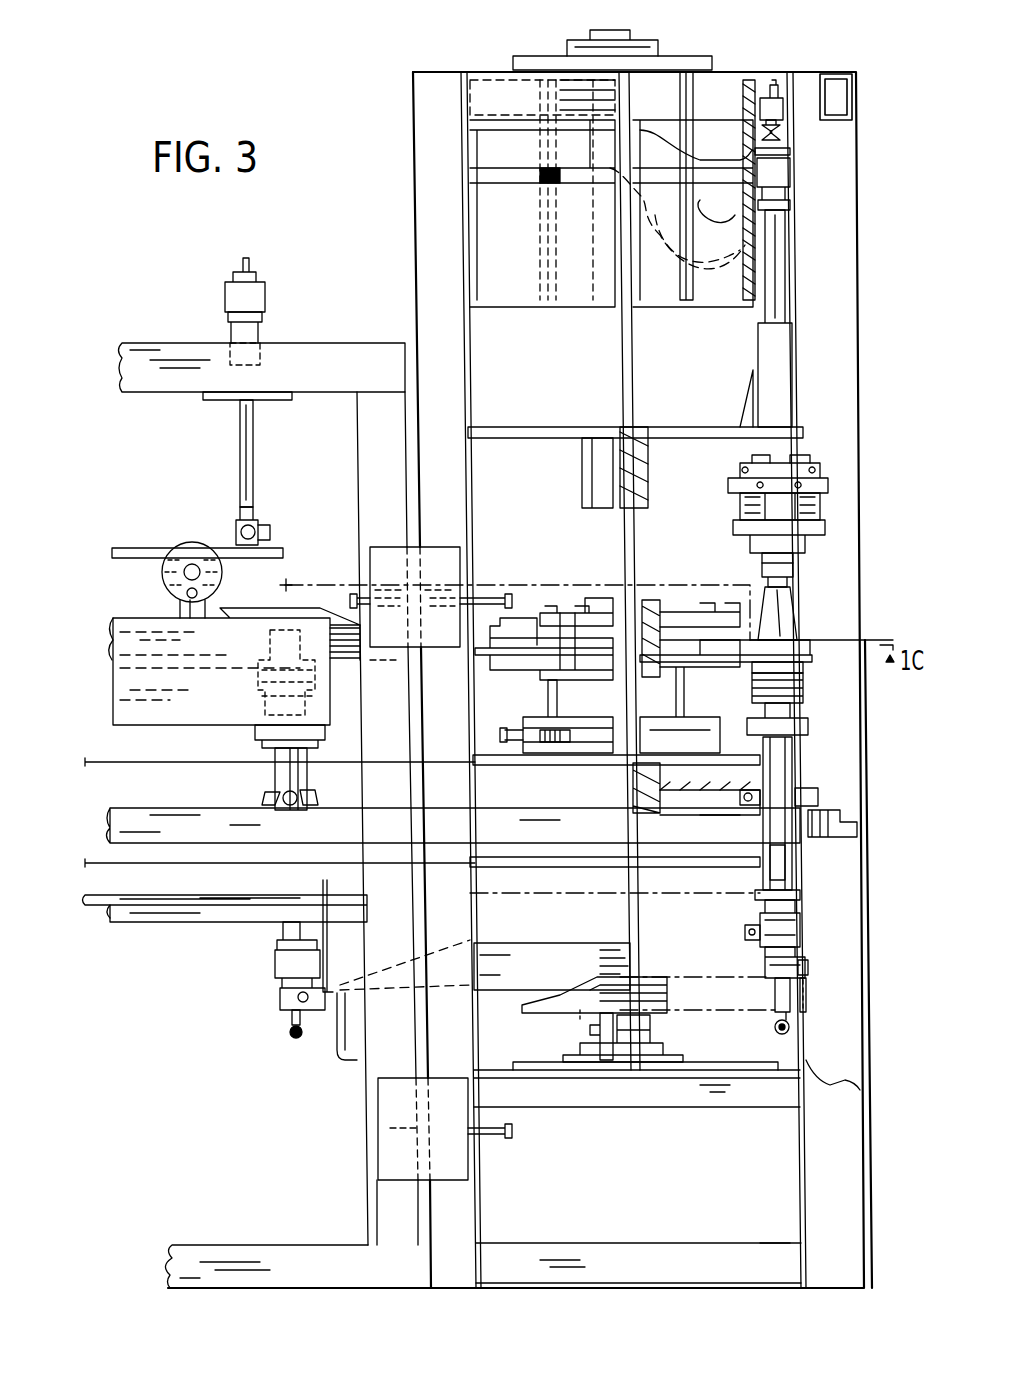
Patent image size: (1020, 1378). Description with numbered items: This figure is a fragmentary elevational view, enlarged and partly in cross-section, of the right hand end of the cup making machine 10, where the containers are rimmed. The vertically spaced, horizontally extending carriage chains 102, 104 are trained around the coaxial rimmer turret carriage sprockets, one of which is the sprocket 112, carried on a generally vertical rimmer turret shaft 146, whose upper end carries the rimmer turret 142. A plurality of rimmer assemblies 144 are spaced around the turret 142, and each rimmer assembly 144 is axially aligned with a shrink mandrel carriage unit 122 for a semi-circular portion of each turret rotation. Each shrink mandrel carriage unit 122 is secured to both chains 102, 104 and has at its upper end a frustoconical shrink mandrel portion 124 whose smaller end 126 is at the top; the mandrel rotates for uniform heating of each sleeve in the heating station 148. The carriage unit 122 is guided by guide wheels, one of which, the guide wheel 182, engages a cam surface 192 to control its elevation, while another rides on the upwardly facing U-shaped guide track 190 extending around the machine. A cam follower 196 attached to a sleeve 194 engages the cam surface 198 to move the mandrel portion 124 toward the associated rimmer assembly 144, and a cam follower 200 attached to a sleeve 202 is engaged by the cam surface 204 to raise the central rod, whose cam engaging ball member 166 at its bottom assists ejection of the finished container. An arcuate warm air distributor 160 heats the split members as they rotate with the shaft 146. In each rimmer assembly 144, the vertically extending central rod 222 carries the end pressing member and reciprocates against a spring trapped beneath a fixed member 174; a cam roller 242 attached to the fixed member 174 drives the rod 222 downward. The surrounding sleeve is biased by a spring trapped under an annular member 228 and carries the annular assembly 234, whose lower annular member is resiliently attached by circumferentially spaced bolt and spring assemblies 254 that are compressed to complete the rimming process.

The indicator dial 10 is at (197, 580).
The carriage chain 102 is at (100, 762).
The carriage chain 104 is at (100, 863).
The rimmer turret carriage sprocket 112 is at (707, 866).
The shrink mandrel carriage unit 122 is at (290, 775).
The shrink mandrel portion 124 is at (783, 620).
The smaller end 126 is at (793, 580).
The rimmer turret 142 is at (680, 428).
The rimmer assembly 144 is at (818, 446).
The rimmer turret shaft 146 is at (638, 358).
The heating station 148 is at (113, 650).
The arcuate warm air distributor 160 is at (343, 612).
The cam engaging ball member 166 is at (790, 1028).
The fixed member 174 is at (783, 108).
The guide wheel 182 is at (303, 798).
The guide track 190 is at (163, 823).
The cam surface 192 is at (808, 838).
The sleeve 194 is at (800, 935).
The cam follower 196 is at (753, 928).
The cam surface 198 is at (492, 950).
The cam follower 200 is at (800, 977).
The sleeve 202 is at (765, 975).
The cam surface 204 is at (538, 1013).
The central rod 222 is at (772, 298).
The annular member 228 is at (788, 170).
The annular assembly 234 is at (827, 487).
The cam roller 242 is at (745, 95).
The bolt and spring assembly 254 is at (813, 510).